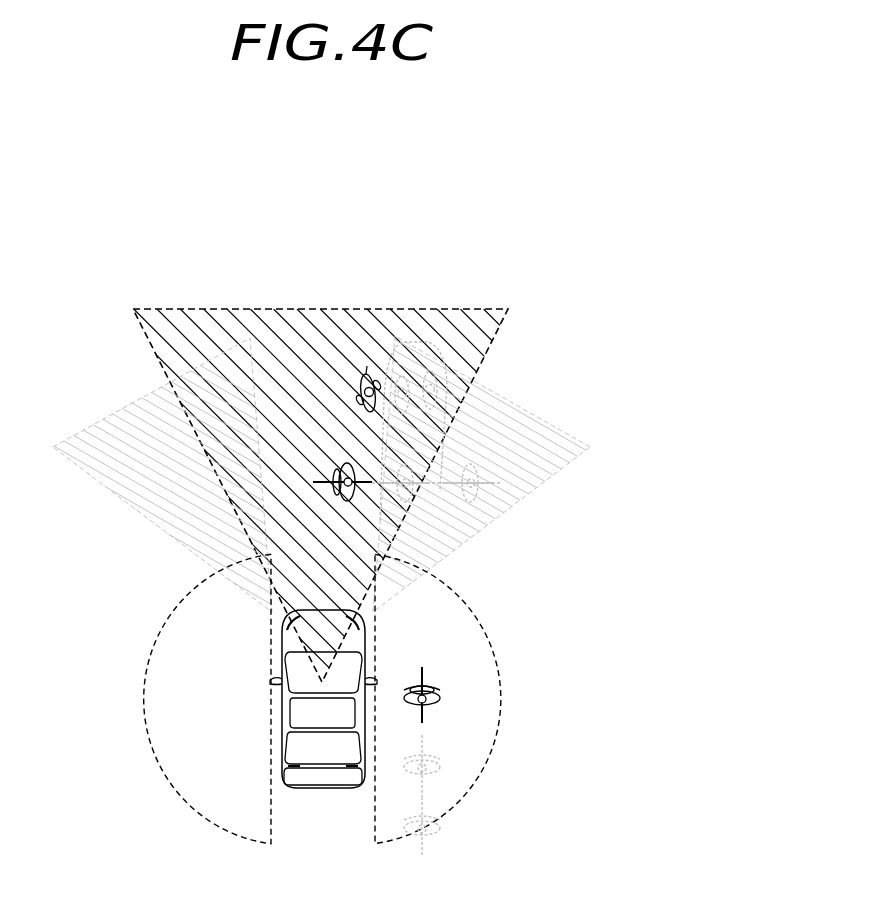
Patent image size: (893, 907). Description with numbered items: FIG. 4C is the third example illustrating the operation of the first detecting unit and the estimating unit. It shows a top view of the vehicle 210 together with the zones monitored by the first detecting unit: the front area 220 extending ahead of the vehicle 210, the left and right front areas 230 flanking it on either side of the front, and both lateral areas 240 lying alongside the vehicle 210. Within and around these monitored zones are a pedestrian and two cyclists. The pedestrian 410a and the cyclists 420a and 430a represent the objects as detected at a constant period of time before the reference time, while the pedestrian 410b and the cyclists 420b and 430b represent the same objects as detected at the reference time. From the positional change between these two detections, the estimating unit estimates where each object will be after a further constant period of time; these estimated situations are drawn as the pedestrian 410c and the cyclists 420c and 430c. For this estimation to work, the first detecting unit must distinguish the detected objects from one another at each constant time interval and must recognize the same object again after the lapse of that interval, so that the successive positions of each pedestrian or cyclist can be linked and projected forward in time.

The vehicle 210 is at (318, 788).
The front area 220 is at (443, 310).
The left and right front areas 230 is at (82, 430).
The lateral areas 240 is at (144, 698).
The pedestrian 410a is at (433, 377).
The pedestrian 410b is at (393, 350).
The pedestrian 410c is at (368, 367).
The cyclist 420a is at (480, 492).
The cyclist 420b is at (418, 489).
The cyclist 420c is at (352, 498).
The cyclist 430a is at (427, 843).
The cyclist 430b is at (427, 780).
The cyclist 430c is at (427, 718).